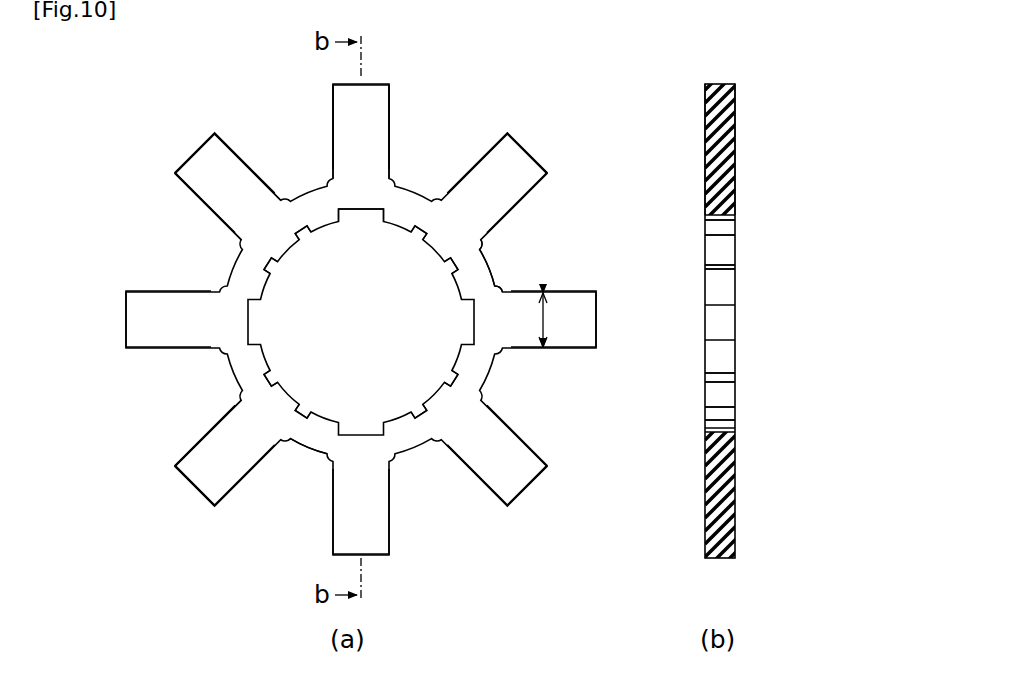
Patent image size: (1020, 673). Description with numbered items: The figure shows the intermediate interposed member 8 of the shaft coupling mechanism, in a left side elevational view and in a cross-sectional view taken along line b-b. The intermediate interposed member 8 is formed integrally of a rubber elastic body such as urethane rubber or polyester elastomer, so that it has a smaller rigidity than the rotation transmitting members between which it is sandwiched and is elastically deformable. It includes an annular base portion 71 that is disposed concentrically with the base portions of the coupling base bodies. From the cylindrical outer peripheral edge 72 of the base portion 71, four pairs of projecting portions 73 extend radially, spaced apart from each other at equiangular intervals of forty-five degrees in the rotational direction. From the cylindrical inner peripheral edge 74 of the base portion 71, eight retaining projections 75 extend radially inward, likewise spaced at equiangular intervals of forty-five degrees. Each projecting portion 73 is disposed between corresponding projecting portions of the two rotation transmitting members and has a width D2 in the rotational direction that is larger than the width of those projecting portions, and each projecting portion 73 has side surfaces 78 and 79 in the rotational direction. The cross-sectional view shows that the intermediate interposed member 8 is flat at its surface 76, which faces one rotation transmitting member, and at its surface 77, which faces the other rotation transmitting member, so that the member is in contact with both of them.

The intermediate interposed member 8 is at (467, 121).
The annular base portion 71 is at (247, 337).
The cylindrical outer peripheral edge 72 is at (490, 263).
The projecting portions 73 is at (369, 113).
The cylindrical inner peripheral edge 74 is at (367, 212).
The retaining projections 75 is at (322, 220).
The surface facing rotation transmitting member 6 76 is at (705, 188).
The surface facing rotation transmitting member 7 77 is at (735, 180).
The side surface 78 is at (333, 122).
The side surface 79 is at (392, 137).
The width of projecting portion D2 is at (561, 344).